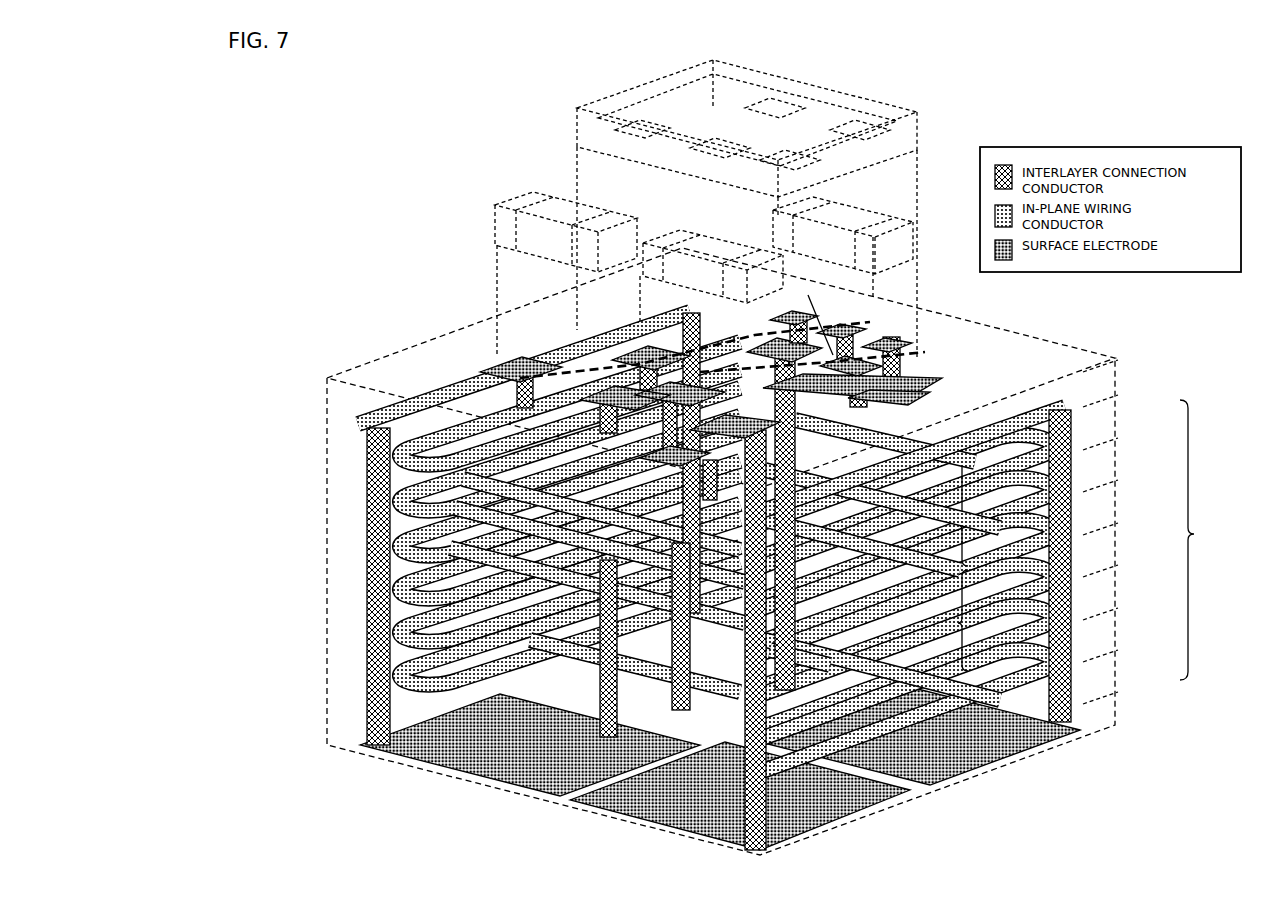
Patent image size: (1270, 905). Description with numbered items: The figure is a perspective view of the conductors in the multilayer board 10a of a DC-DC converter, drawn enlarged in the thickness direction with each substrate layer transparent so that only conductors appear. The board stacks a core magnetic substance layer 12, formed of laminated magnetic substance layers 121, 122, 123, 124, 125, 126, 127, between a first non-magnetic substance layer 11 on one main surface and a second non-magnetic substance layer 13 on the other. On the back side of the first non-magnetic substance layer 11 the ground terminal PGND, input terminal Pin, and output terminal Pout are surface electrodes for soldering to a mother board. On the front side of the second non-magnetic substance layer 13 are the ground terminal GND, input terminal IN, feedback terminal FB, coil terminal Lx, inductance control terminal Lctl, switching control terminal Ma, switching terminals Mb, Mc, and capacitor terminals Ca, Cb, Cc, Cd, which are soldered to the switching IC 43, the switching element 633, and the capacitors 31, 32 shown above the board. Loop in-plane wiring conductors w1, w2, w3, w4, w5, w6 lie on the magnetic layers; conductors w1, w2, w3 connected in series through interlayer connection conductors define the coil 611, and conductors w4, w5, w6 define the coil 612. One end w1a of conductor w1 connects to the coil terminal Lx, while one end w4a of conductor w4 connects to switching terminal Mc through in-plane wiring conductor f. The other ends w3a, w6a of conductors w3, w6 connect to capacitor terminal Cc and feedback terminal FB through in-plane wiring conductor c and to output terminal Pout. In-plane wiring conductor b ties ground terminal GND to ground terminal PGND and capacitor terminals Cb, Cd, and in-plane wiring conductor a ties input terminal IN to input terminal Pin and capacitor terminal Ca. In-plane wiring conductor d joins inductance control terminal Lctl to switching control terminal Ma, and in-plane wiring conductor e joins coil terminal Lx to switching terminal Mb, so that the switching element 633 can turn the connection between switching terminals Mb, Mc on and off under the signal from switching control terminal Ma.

The switching IC 43 is at (584, 132).
The capacitor 31 is at (538, 198).
The capacitor 32 is at (683, 240).
The switching element 633 is at (784, 228).
The multilayer board 10a is at (417, 331).
The second non-magnetic substance layer 13 is at (1120, 374).
The magnetic substance layer 127 is at (1126, 410).
The magnetic substance layer 126 is at (1126, 453).
The magnetic substance layer 125 is at (1126, 495).
The magnetic substance layer 124 is at (1126, 538).
The magnetic substance layer 123 is at (1126, 580).
The magnetic substance layer 122 is at (1126, 623).
The magnetic substance layer 121 is at (1126, 665).
The first non-magnetic substance layer 11 is at (1120, 707).
The core magnetic substance layer 12 is at (1200, 540).
The input terminal Pin is at (480, 775).
The output terminal Pout is at (680, 830).
The ground terminal PGND is at (990, 758).
The coil 612 is at (950, 482).
The coil 611 is at (950, 617).
The in-plane wiring conductor w6 is at (906, 496).
The in-plane wiring conductor w5 is at (906, 539).
The in-plane wiring conductor w4 is at (906, 581).
The in-plane wiring conductor w3 is at (906, 626).
The in-plane wiring conductor w2 is at (906, 667).
The in-plane wiring conductor w1 is at (906, 711).
The one end of in-plane wiring conductor w4 w4a is at (601, 514).
The other end of in-plane wiring conductor w6 w6a is at (815, 549).
The other end of in-plane wiring conductor w3 w3a is at (840, 658).
The one end of in-plane wiring conductor w1 w1a is at (798, 648).
The in-plane wiring conductor c is at (820, 492).
The feedback terminal FB is at (860, 417).
The in-plane wiring conductor a is at (433, 390).
The in-plane wiring conductor b is at (1047, 400).
The capacitor terminal Ca is at (504, 356).
The capacitor terminal Cb is at (555, 425).
The capacitor terminal Cc is at (785, 445).
The capacitor terminal Cd is at (672, 463).
The ground terminal GND is at (717, 351).
The input terminal IN is at (650, 335).
The switching terminal Mc is at (812, 307).
The switching terminal Mb is at (856, 319).
The switching control terminal Ma is at (897, 331).
The in-plane wiring conductor f is at (820, 308).
The in-plane wiring conductor e is at (905, 382).
The in-plane wiring conductor d is at (923, 390).
The coil terminal Lx is at (695, 347).
The inductance control terminal Lctl is at (900, 352).